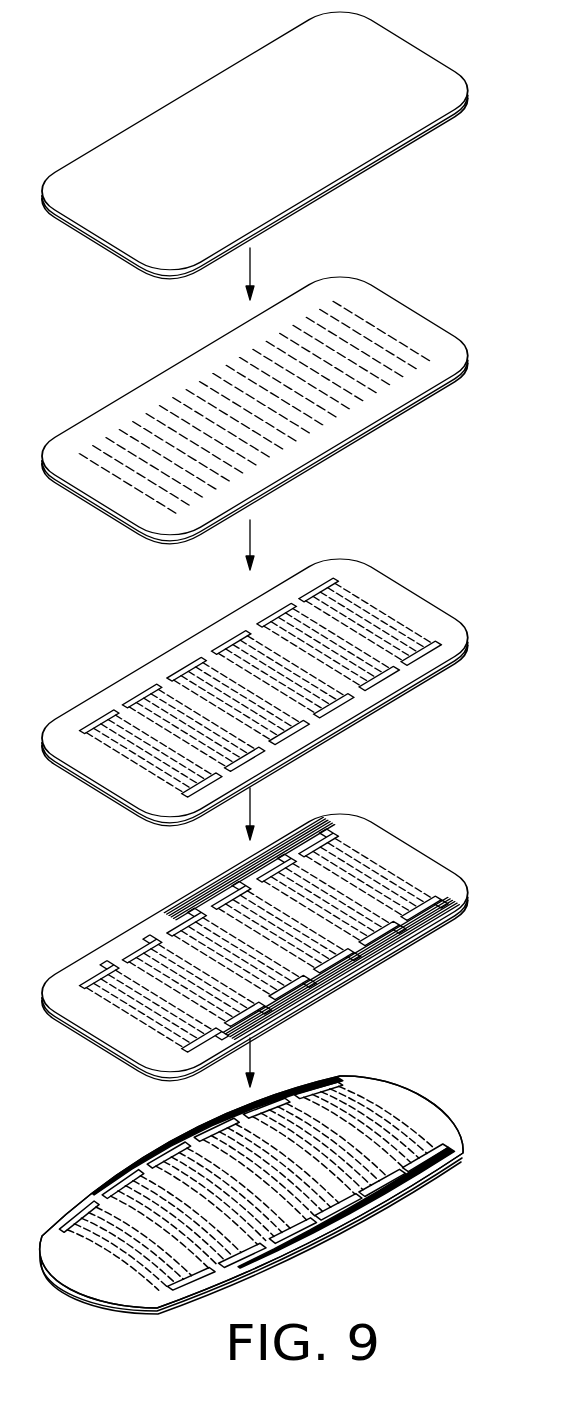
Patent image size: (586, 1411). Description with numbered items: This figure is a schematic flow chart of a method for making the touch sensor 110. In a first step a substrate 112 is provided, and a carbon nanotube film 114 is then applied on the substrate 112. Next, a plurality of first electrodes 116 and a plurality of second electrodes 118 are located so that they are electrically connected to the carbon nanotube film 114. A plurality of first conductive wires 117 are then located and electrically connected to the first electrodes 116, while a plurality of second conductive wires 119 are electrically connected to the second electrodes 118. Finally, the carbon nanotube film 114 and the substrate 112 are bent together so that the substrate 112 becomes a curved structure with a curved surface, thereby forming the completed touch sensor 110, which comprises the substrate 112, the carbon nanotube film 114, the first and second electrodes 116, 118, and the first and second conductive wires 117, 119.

The touch sensor 110 is at (435, 1068).
The substrate 112 is at (397, 140).
The carbon nanotube film 114 is at (388, 335).
The first electrodes 116 is at (138, 690).
The first conductive wires 117 is at (190, 890).
The second electrodes 118 is at (436, 640).
The second conductive wires 119 is at (360, 972).